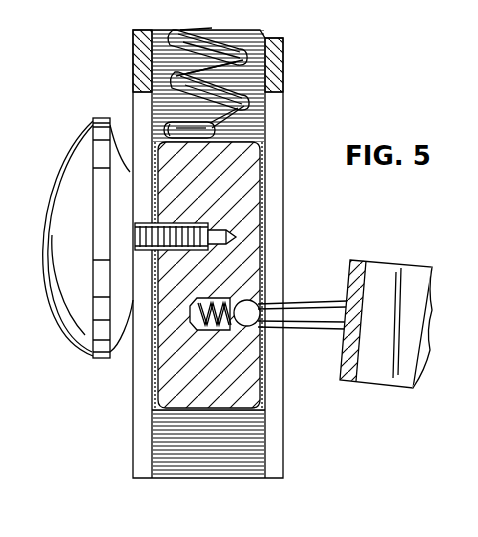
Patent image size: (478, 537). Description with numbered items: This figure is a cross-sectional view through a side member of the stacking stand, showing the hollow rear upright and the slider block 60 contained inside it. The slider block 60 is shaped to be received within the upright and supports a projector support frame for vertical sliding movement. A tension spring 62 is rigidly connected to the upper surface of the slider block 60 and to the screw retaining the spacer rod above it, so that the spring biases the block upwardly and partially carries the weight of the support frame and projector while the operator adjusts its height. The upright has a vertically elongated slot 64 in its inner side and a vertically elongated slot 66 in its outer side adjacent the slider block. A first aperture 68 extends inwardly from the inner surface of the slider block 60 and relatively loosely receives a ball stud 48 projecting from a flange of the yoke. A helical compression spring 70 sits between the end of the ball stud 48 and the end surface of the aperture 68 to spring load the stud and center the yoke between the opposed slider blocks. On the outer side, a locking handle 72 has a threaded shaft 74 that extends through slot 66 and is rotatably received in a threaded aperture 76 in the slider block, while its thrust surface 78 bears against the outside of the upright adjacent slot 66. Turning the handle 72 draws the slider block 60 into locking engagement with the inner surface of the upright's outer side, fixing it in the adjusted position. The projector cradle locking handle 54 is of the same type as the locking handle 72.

The ball stud 48 is at (266, 305).
The threaded handle 54 is at (72, 328).
The slider block 60 is at (256, 146).
The tension spring 62 is at (234, 55).
The vertically elongated slot 64 is at (284, 107).
The vertically elongated slot 66 is at (135, 101).
The first aperture 68 is at (262, 290).
The helical compression spring 70 is at (254, 334).
The locking handle 72 is at (49, 186).
The threaded shaft 74 is at (135, 229).
The threaded aperture 76 is at (224, 233).
The thrust surface 78 is at (128, 346).